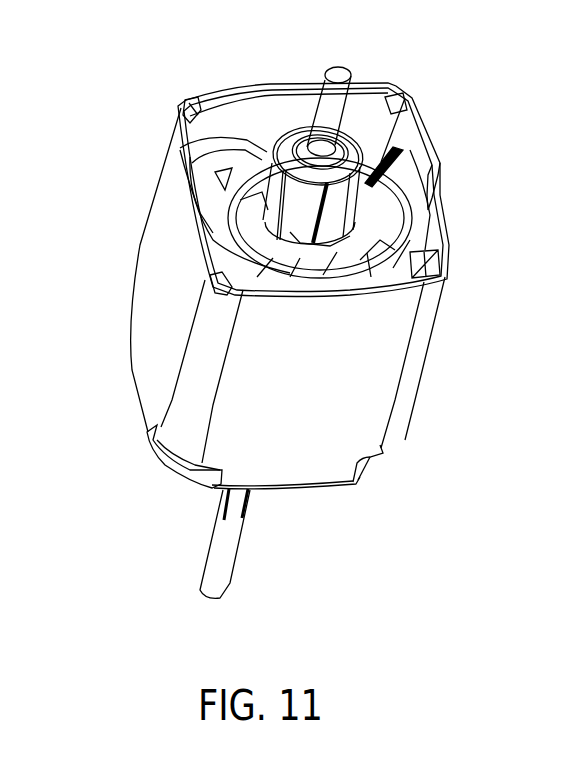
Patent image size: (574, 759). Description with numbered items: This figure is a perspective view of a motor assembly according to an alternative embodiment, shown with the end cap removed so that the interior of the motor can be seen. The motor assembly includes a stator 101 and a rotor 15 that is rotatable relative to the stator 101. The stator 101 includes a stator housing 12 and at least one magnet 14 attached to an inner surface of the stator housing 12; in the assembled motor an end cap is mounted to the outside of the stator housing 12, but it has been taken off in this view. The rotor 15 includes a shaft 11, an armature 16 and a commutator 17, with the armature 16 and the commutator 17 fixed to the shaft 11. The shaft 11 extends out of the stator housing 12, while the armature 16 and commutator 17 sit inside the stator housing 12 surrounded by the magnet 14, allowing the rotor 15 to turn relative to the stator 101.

The shaft 11 is at (218, 548).
The stator housing 12 is at (150, 281).
The magnet 14 is at (190, 112).
The rotor 15 is at (398, 151).
The armature 16 is at (196, 178).
The commutator 17 is at (323, 205).
The stator 101 is at (373, 353).